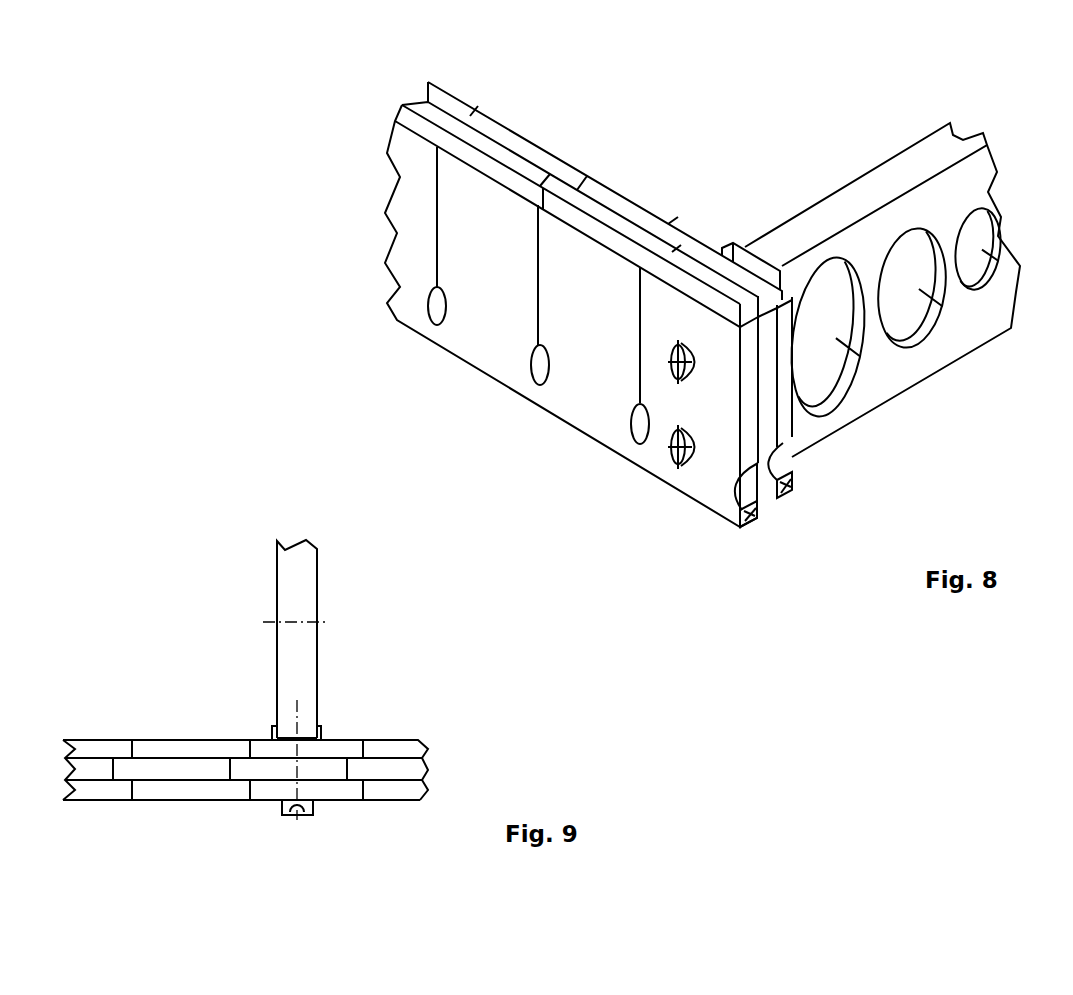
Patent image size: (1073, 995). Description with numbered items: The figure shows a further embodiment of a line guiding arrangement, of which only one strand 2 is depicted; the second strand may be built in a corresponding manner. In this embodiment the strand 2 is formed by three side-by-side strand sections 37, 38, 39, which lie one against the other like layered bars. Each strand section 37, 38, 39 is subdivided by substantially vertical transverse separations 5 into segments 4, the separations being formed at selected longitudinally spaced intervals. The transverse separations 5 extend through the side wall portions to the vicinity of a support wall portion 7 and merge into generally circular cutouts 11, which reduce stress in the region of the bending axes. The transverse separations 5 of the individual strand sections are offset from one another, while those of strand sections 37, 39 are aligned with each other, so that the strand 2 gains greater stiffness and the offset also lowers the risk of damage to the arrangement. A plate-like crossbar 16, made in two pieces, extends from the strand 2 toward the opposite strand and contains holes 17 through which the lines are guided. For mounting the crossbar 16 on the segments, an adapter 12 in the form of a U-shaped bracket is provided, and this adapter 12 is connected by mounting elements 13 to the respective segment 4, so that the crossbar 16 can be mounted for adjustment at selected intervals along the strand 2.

In FIG. 8, the strand 2 is at (680, 128).
In FIG. 9, the strand 2 is at (158, 716).
In FIG. 8, the segment 4 is at (599, 314).
In FIG. 8, the transverse separation 5 is at (577, 172).
In FIG. 9, the transverse separation 5 is at (363, 742).
In FIG. 8, the support wall portion 7 is at (535, 388).
In FIG. 8, the circular cutout 11 is at (533, 372).
In FIG. 8, the adapter 12 is at (737, 247).
In FIG. 9, the adapter 12 is at (268, 724).
In FIG. 8, the mounting element 13 is at (787, 460).
In FIG. 9, the mounting element 13 is at (284, 806).
In FIG. 8, the crossbar 16 is at (933, 152).
In FIG. 9, the crossbar 16 is at (298, 595).
In FIG. 8, the hole 17 is at (913, 323).
In FIG. 8, the strand section 37 is at (505, 130).
In FIG. 9, the strand section 37 is at (425, 746).
In FIG. 8, the strand section 38 is at (455, 125).
In FIG. 9, the strand section 38 is at (425, 765).
In FIG. 8, the strand section 39 is at (420, 128).
In FIG. 9, the strand section 39 is at (425, 785).